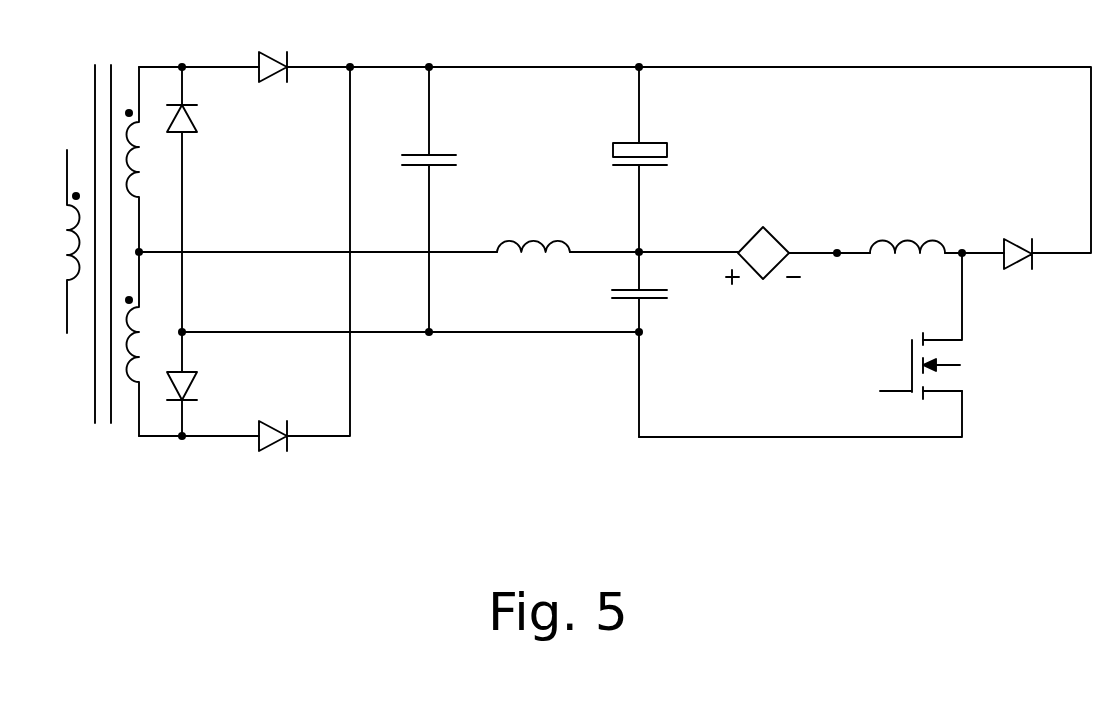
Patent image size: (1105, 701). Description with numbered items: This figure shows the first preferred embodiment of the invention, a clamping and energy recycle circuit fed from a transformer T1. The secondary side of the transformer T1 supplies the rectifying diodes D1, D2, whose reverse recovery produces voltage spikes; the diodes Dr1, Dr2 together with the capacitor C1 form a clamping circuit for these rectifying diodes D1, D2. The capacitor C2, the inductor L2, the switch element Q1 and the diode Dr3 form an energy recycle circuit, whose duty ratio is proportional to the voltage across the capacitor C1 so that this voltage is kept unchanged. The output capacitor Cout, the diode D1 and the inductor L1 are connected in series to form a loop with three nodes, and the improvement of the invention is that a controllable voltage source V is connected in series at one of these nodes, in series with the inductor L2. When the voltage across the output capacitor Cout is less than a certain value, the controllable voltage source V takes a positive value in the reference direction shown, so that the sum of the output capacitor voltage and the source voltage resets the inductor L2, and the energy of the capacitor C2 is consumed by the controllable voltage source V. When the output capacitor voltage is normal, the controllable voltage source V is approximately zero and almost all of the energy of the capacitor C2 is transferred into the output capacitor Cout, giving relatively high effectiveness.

The transformer T1 is at (103, 234).
The rectifying diode D1 is at (275, 49).
The rectifying diode D2 is at (274, 420).
The diode Dr1 is at (197, 139).
The diode Dr2 is at (197, 350).
The diode Dr3 is at (1022, 274).
The capacitor C1 is at (447, 163).
The capacitor C2 is at (650, 314).
The output capacitor Cout is at (610, 155).
The inductor L1 is at (533, 266).
The inductor L2 is at (907, 232).
The controllable voltage source V is at (763, 241).
The switch element Q1 is at (939, 366).